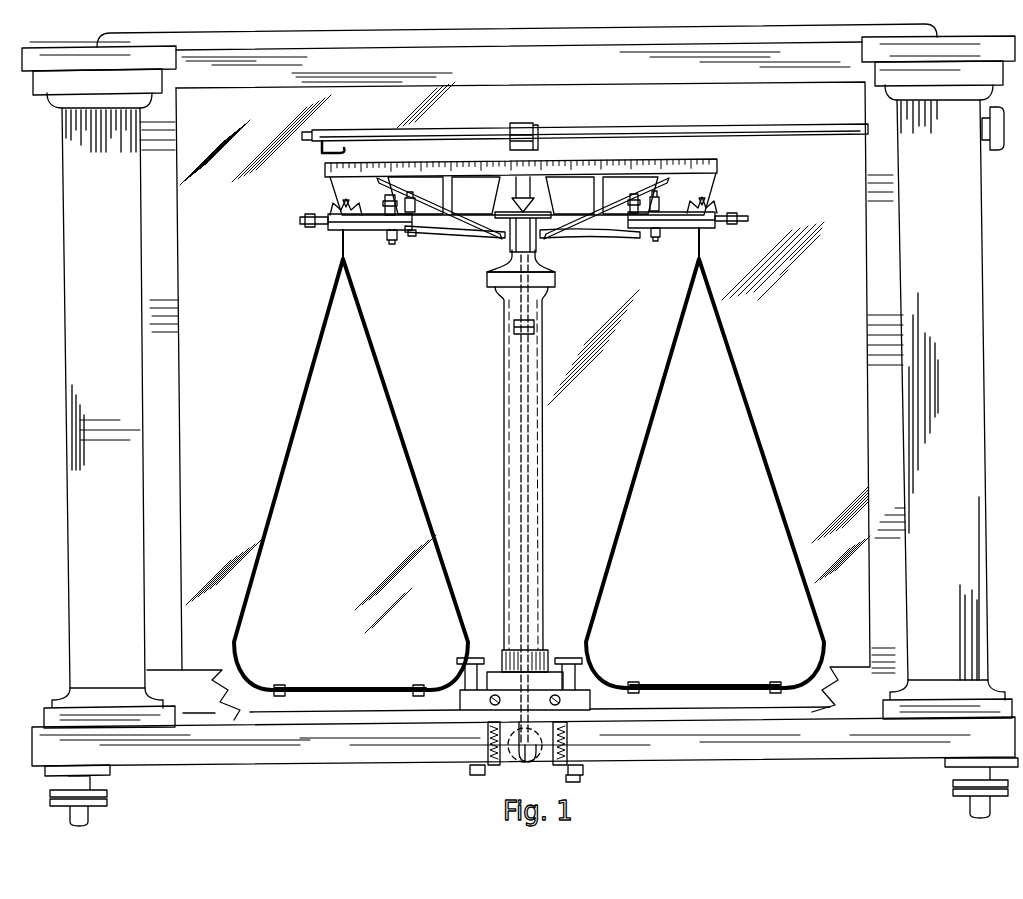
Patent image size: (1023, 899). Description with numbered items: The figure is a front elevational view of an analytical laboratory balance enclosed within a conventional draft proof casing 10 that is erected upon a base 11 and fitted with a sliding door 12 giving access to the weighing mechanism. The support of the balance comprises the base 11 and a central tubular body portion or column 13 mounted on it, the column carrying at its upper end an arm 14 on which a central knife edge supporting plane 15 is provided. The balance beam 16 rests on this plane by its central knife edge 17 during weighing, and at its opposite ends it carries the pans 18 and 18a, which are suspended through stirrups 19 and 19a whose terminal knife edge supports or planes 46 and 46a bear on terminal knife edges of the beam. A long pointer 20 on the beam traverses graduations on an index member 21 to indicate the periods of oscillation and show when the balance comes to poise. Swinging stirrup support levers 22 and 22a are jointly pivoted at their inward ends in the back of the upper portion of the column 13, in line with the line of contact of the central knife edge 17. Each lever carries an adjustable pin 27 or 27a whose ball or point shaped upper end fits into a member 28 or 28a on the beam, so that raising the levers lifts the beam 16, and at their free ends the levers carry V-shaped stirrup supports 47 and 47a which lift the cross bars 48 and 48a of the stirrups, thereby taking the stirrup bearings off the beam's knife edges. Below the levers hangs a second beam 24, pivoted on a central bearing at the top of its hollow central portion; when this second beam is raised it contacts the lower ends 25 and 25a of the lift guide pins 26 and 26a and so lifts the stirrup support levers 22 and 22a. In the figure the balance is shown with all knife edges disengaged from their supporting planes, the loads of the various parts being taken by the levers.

The draft proof casing 10 is at (140, 268).
The base 11 is at (326, 766).
The sliding door 12 is at (183, 440).
The central tubular body portion or column 13 is at (503, 375).
The arm 14 is at (513, 216).
The central knife edge supporting plane 15 is at (532, 200).
The balance beam 16 is at (690, 163).
The central knife edge 17 is at (515, 185).
The pan 18 is at (692, 686).
The pan 18a is at (352, 687).
The stirrup 19 is at (701, 248).
The stirrup 19a is at (339, 245).
The pointer 20 is at (523, 457).
The index member 21 is at (512, 645).
The swinging stirrup support lever 22 is at (588, 212).
The swinging stirrup support lever 22a is at (478, 213).
The second beam 24 is at (582, 236).
The lower end of lift guide pin 25 is at (637, 224).
The lower end of lift guide pin 25a is at (406, 236).
The lift guide pin 26 is at (633, 195).
The lift guide pin 26a is at (408, 198).
The adjustable pin 27 is at (660, 205).
The adjustable pin 27a is at (400, 205).
The member 28 is at (653, 197).
The member 28a is at (388, 199).
The terminal knife edge support or plane 46 is at (704, 199).
The terminal knife edge support or plane 46a is at (333, 205).
The V-shaped stirrup support 47 is at (716, 203).
The V-shaped stirrup support 47a is at (326, 212).
The cross bar 48 is at (701, 201).
The cross bar 48a is at (336, 204).